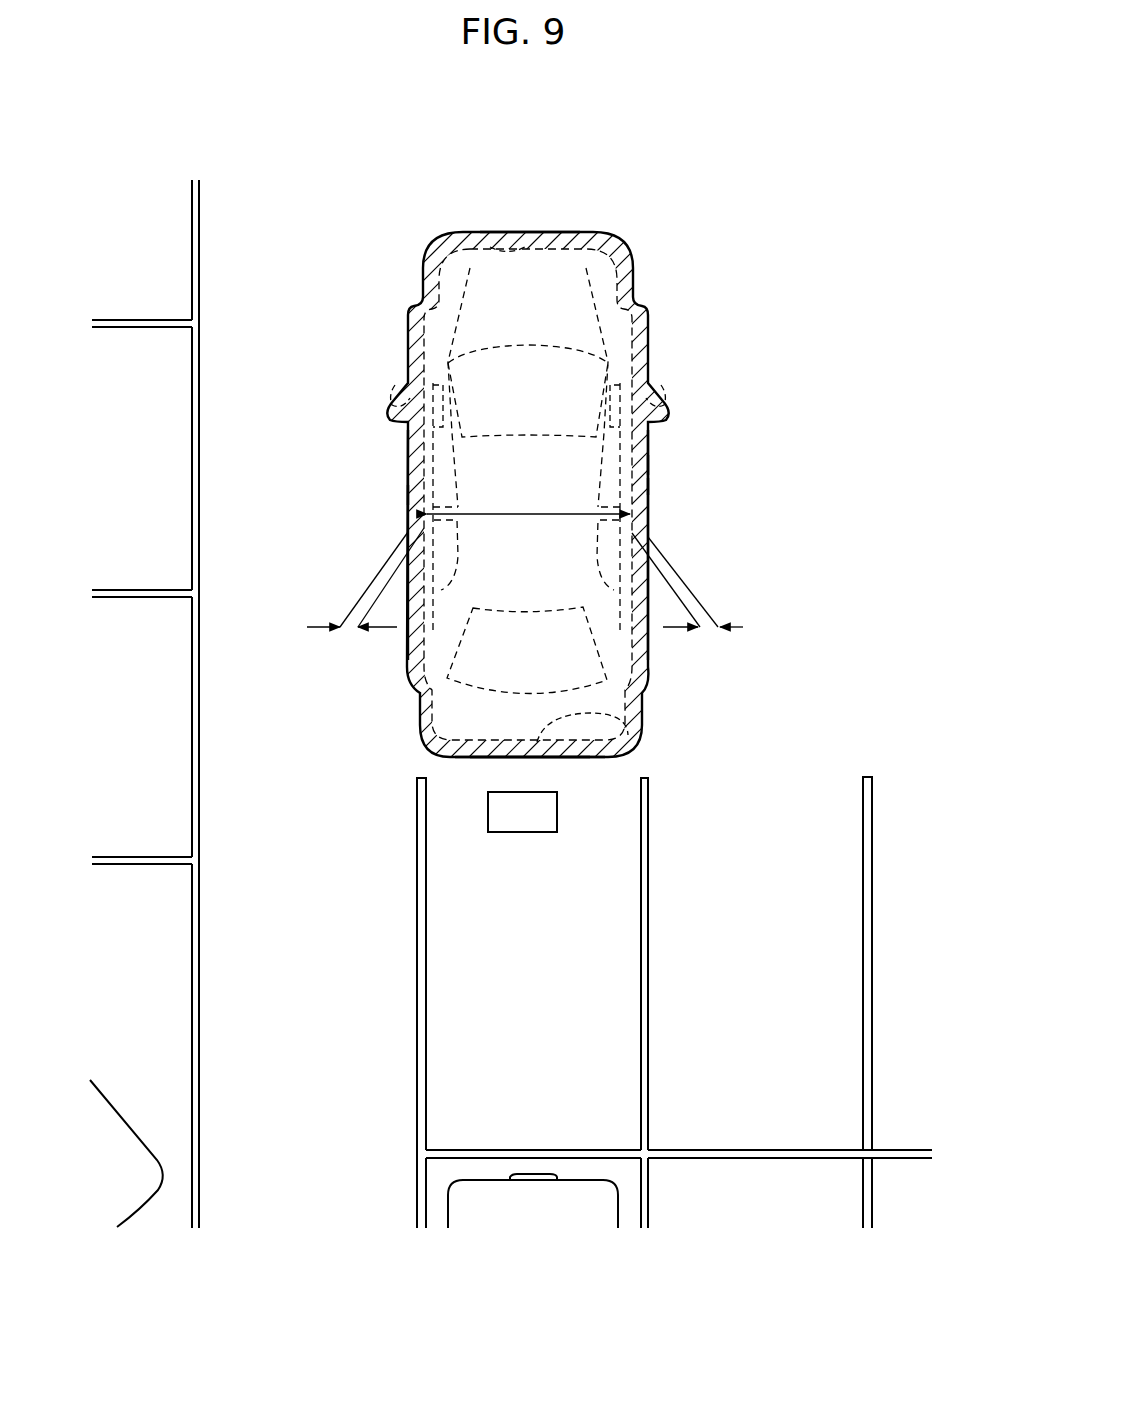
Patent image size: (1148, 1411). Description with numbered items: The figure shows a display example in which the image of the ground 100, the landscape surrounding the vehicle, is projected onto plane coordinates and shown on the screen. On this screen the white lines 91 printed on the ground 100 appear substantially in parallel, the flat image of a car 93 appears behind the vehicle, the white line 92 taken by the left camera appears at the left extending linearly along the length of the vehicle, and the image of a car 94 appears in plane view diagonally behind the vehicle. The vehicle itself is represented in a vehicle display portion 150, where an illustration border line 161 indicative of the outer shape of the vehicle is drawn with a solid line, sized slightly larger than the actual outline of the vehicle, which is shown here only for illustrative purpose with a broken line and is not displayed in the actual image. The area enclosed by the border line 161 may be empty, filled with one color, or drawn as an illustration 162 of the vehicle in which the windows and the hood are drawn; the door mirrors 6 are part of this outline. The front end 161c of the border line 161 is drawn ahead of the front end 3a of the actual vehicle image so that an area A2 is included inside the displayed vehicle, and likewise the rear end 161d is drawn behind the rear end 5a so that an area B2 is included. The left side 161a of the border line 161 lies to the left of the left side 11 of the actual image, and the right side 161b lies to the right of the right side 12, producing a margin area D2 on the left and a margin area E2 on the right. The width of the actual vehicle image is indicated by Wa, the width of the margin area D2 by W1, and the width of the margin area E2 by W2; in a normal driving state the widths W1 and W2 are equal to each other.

The front end of the front bumper 3a is at (507, 248).
The front end of the illustration border line 161c is at (551, 232).
The area A2 is at (590, 243).
The illustration border line 161 is at (650, 330).
The door mirror 6 is at (400, 393).
The left side of the vehicle 11 is at (440, 430).
The illustration of the vehicle 162 is at (575, 468).
The left side of the illustration border line 161a is at (408, 472).
The margin area E2 is at (651, 463).
The vehicle display portion 150 is at (654, 486).
The margin area D2 is at (410, 495).
The width of the actual image of the vehicle Wa is at (528, 500).
The right side of the illustration border line 161b is at (651, 516).
The width of the margin area D2 W1 is at (365, 595).
The width of the margin area E2 W2 is at (687, 597).
The right side of the vehicle 12 is at (652, 637).
The ground 100 is at (780, 738).
The white line 92 is at (199, 711).
The rear end of the rear bumper 5a is at (640, 720).
The area B2 is at (430, 750).
The rear end of the illustration border line 161d is at (473, 762).
The white line 91 is at (417, 883).
The car 94 is at (102, 1135).
The car 93 is at (483, 1217).